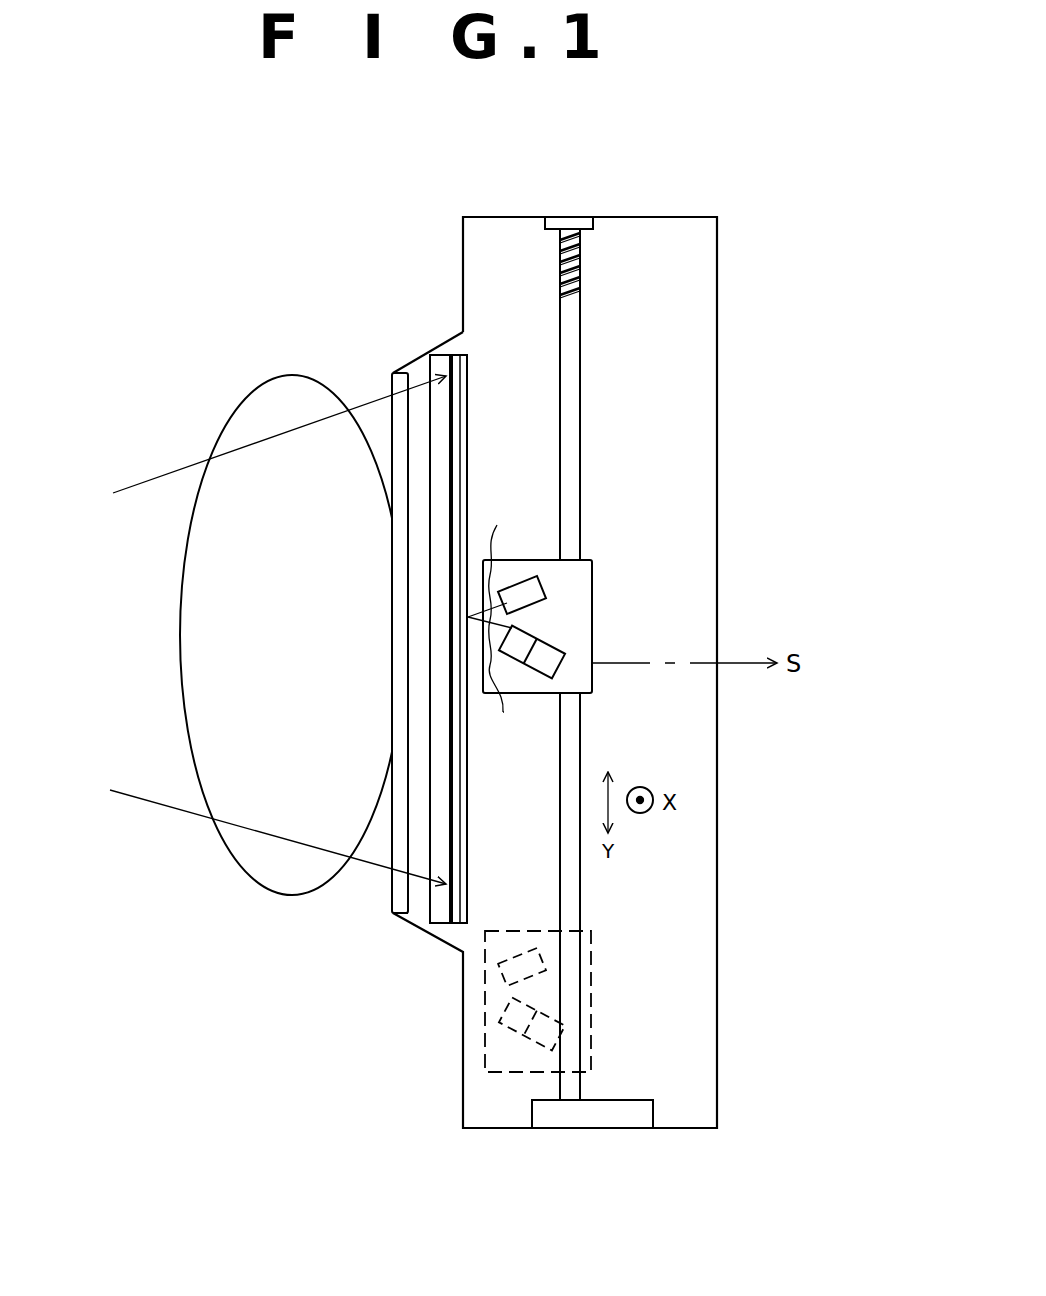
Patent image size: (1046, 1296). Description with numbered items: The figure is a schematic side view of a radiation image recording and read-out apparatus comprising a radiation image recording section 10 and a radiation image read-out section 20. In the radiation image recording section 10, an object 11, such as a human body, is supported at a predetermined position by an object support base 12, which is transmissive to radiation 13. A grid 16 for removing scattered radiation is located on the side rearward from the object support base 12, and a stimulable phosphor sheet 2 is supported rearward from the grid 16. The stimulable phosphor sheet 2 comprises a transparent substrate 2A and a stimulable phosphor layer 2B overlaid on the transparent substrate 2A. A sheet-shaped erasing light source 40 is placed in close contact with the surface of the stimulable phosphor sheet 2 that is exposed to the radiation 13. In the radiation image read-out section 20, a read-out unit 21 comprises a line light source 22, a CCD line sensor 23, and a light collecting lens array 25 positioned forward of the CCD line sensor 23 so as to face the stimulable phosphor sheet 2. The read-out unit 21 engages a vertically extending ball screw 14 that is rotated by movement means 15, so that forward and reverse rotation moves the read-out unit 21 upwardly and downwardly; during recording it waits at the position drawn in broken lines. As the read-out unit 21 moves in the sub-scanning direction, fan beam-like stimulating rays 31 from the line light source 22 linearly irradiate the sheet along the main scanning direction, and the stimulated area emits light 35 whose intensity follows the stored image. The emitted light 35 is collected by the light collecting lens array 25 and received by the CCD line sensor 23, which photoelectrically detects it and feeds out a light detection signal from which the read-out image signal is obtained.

The stimulable phosphor sheet 2 is at (405, 578).
The transparent substrate 2A is at (440, 354).
The stimulable phosphor layer 2B is at (458, 354).
The radiation image recording section 10 is at (366, 340).
The object 11 is at (280, 884).
The object support base 12 is at (392, 902).
The radiation 13 is at (155, 805).
The ball screw 14 is at (582, 312).
The movement means 15 is at (640, 1100).
The grid 16 is at (403, 914).
The radiation image read-out section 20 is at (612, 459).
The read-out unit 21 is at (585, 683).
The line light source 22 is at (537, 590).
The CCD line sensor 23 is at (553, 657).
The light collecting lens array 25 is at (530, 639).
The stimulating rays 31 is at (505, 604).
The emitted light 35 is at (500, 728).
The sheet-shaped erasing light source 40 is at (443, 924).